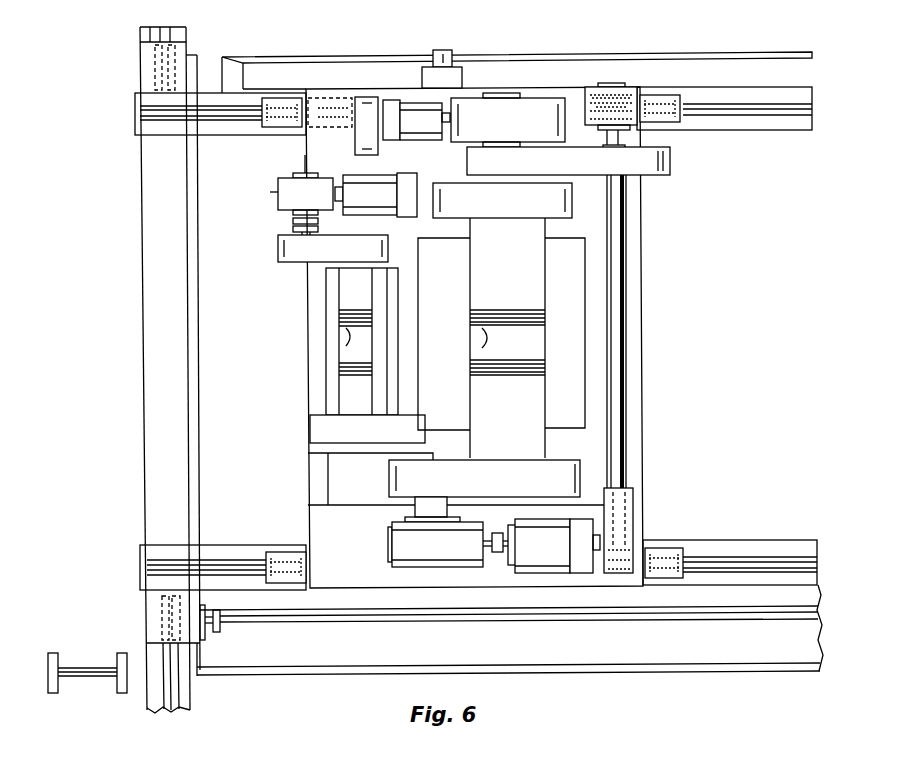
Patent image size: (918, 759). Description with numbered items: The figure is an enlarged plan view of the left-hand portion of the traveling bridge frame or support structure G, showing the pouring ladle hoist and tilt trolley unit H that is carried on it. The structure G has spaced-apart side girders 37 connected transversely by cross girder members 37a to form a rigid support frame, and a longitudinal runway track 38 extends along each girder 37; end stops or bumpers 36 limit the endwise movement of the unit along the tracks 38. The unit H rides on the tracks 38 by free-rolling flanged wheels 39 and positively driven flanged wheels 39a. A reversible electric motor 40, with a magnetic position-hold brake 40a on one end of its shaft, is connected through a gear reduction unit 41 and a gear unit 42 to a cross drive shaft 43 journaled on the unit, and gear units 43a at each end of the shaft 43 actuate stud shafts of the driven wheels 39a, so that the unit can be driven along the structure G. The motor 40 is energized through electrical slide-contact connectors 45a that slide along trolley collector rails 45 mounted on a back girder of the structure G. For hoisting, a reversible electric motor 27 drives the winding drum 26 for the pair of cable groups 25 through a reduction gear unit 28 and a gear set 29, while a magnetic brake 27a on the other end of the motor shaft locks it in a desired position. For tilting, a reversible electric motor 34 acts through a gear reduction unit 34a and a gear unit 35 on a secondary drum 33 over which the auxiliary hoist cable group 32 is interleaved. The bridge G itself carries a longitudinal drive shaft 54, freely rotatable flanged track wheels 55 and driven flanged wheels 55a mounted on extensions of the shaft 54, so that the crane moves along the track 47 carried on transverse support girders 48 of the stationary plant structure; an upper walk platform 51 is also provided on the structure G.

The cable groups 25 is at (490, 328).
The winding drum 26 is at (470, 398).
The reversible electric motor 27 is at (512, 524).
The magnetic brake 27a is at (634, 497).
The reduction gear unit 28 is at (392, 543).
The gear set 29 is at (390, 471).
The auxiliary hoist cable group 32 is at (342, 340).
The secondary drum 33 is at (330, 391).
The reversible electric motor 34 is at (398, 175).
The gear reduction unit 34a is at (278, 193).
The gear unit 35 is at (278, 246).
The end stops 36 is at (135, 104).
The side girders 37 is at (247, 136).
The cross girder members 37a is at (175, 312).
The longitudinal runway tracks 38 is at (750, 118).
The free-rolling flanged wheels 39 is at (317, 97).
The driven flanged wheels 39a is at (600, 92).
The reversible electric motor 40 is at (405, 78).
The magnetic position-hold brake 40a is at (365, 97).
The gear reduction unit 41 is at (535, 98).
The gear unit 42 is at (669, 175).
The cross drive shaft 43 is at (626, 348).
The gear units 43a is at (623, 87).
The trolley collector rails 45 is at (538, 55).
The electrical slide-contact connectors 45a is at (435, 50).
The track 47 is at (170, 714).
The transverse support girders 48 is at (192, 692).
The upper walk platform 51 is at (612, 672).
The longitudinal drive shaft 54 is at (430, 622).
The freely rotatable flanged track wheels 55 is at (153, 55).
The driven flanged wheels 55a is at (160, 604).
The trolley unit H is at (644, 394).
The traveling bridge frame G is at (510, 645).